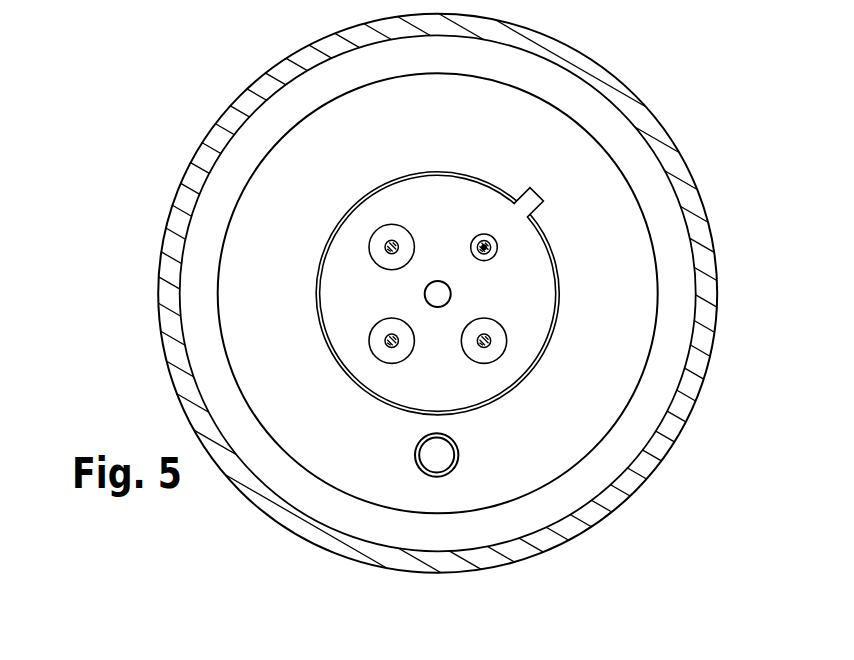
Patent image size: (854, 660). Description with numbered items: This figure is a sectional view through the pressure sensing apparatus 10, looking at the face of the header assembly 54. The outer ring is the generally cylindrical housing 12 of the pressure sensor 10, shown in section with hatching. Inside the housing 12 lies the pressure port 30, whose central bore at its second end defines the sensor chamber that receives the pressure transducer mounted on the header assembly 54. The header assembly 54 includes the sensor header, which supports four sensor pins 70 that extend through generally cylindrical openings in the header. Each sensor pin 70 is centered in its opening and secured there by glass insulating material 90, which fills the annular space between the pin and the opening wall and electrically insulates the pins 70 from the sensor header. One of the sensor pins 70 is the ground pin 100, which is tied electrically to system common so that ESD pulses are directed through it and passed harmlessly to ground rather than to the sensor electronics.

The pressure sensing apparatus 10 is at (399, 293).
The housing 12 is at (173, 243).
The pressure port 30 is at (267, 193).
The header assembly 54 is at (535, 168).
The sensor pins 70 is at (385, 242).
The glass insulating material 90 is at (399, 235).
The ground pin 100 is at (483, 243).